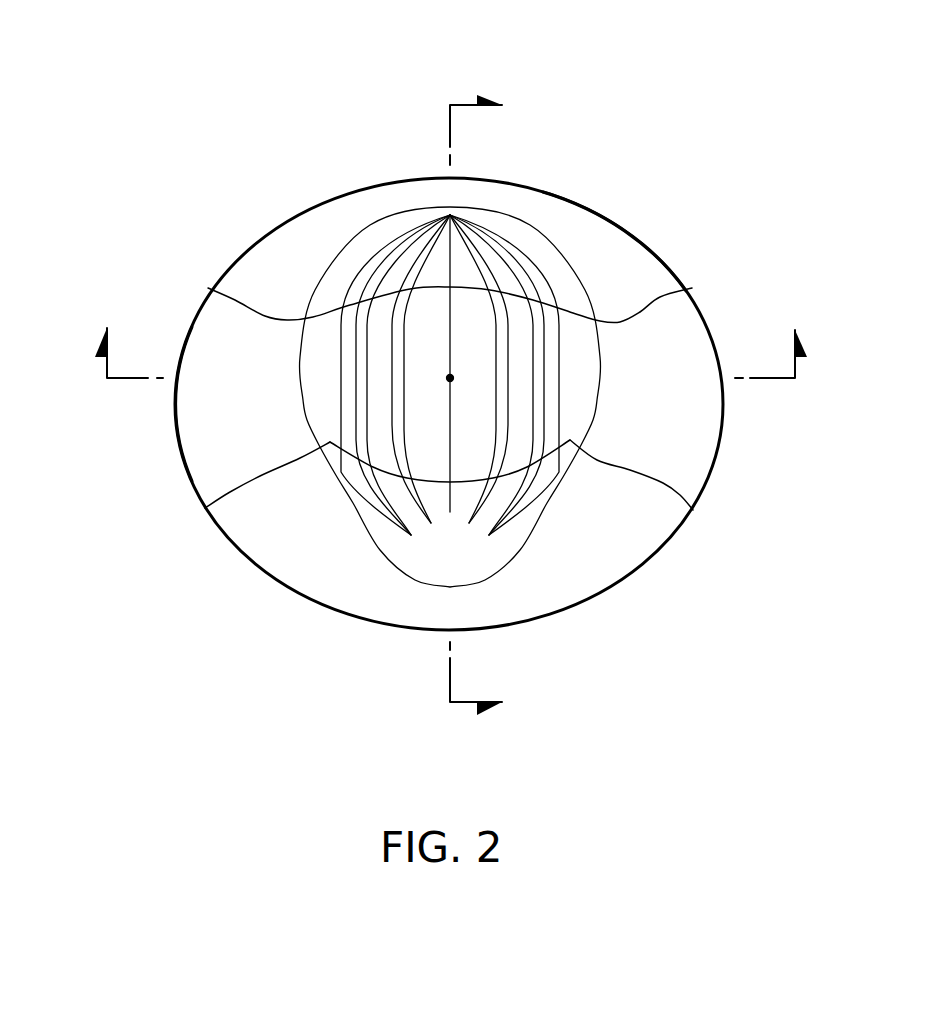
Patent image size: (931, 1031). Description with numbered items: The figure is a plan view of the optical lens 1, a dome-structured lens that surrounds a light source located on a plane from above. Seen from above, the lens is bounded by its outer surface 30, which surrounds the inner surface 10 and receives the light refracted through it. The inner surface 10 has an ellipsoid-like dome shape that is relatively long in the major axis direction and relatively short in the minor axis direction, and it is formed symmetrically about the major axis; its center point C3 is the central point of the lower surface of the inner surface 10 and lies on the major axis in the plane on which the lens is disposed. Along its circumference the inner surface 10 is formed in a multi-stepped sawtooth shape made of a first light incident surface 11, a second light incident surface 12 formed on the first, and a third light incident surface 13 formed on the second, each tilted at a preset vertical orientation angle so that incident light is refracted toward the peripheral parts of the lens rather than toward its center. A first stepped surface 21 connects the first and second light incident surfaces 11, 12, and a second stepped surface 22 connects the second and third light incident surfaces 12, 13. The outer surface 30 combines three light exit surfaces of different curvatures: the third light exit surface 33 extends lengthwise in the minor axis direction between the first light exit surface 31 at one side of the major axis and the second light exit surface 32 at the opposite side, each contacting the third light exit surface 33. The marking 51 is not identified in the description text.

The optical lens 1 is at (229, 36).
The inner surface 10 is at (481, 474).
The first light incident surface 11 is at (522, 525).
The second light incident surface 12 is at (515, 453).
The third light incident surface 13 is at (475, 407).
The first stepped surface 21 is at (385, 510).
The second stepped surface 22 is at (403, 463).
The outer surface 30 is at (328, 223).
The first light exit surface 31 is at (228, 513).
The second light exit surface 32 is at (242, 283).
The third light exit surface 33 is at (190, 415).
The outer surface 51 is at (637, 230).
The center point C3 is at (450, 378).